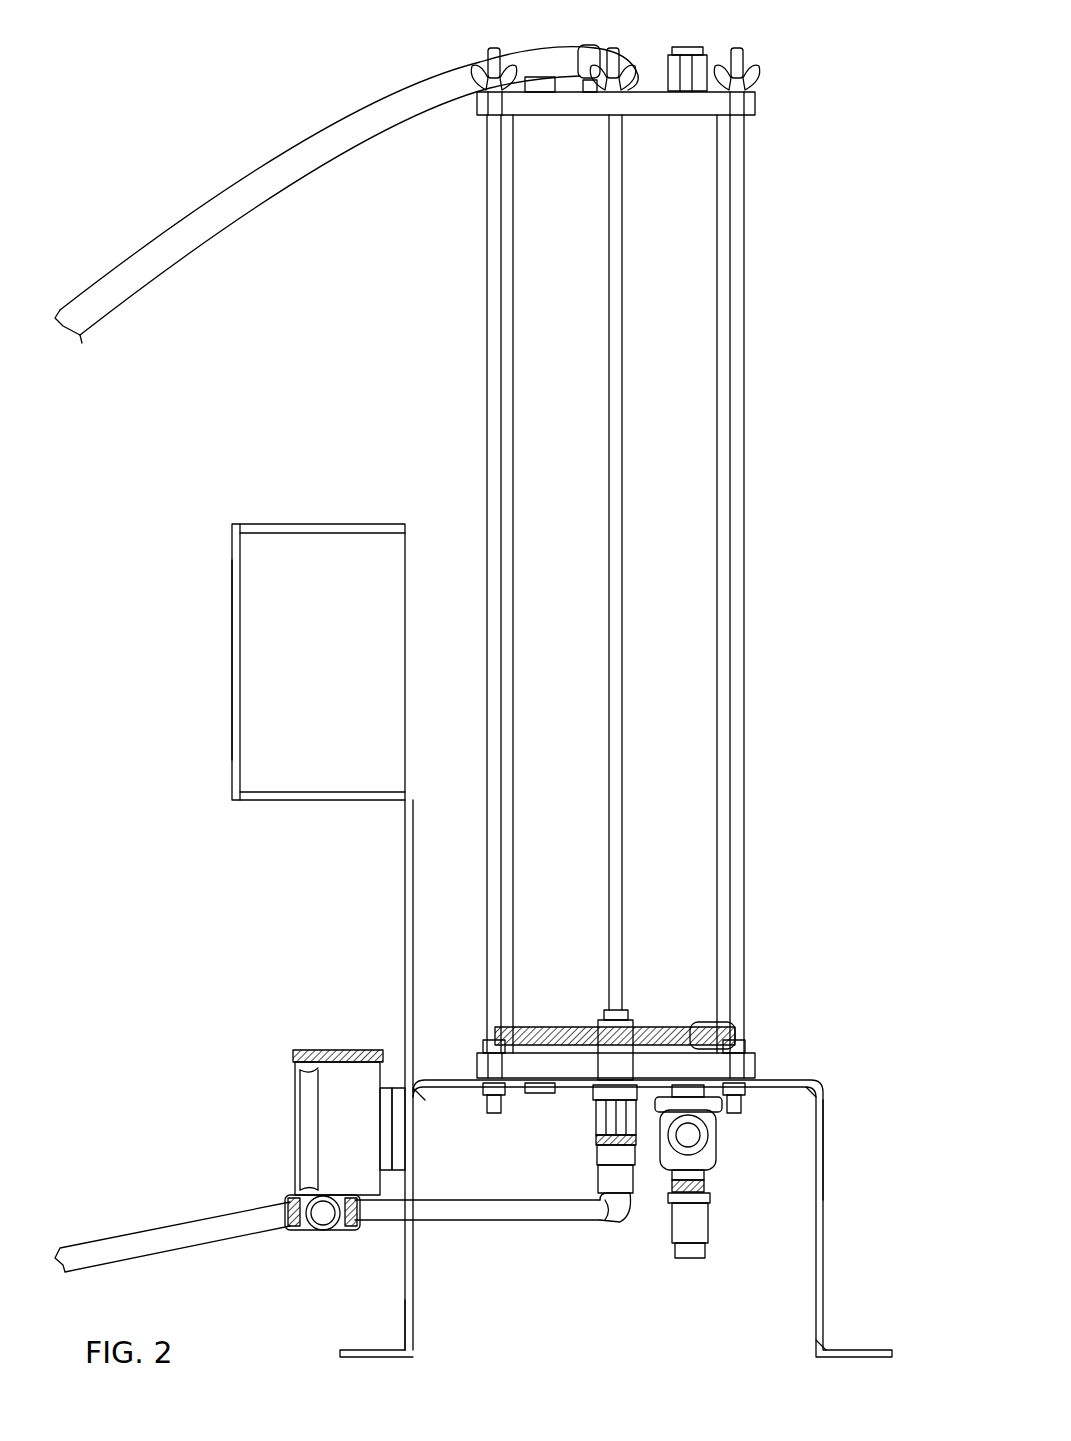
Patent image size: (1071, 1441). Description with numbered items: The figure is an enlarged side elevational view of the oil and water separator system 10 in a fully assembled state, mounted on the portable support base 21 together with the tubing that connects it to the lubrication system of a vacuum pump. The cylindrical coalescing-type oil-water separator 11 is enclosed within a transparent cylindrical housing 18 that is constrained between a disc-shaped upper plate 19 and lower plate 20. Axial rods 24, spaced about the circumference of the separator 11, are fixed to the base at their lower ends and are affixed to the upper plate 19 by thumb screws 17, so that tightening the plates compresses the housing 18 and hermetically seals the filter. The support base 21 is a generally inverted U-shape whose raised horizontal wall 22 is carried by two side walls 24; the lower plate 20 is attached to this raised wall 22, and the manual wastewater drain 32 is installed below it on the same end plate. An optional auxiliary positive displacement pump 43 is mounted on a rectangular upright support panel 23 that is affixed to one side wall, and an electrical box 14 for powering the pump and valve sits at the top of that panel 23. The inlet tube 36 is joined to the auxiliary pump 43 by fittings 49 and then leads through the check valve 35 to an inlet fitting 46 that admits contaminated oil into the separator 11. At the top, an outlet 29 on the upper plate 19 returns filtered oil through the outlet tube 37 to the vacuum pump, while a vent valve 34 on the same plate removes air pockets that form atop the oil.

The oil and water separator system 10 is at (198, 540).
The oil-water separator 11 is at (690, 490).
The electrical box 14 is at (316, 524).
The thumb screws 17 is at (485, 80).
The housing 18 is at (508, 412).
The upper plate 19 is at (757, 97).
The lower plate 20 is at (740, 1068).
The support base 21 is at (416, 1305).
The raised horizontal wall 22 is at (790, 1075).
The upright support panel 23 is at (418, 935).
The side walls / axial rods 24 is at (497, 223).
The outlet 29 is at (630, 88).
The wastewater drain 32 is at (700, 1148).
The vent valve 34 is at (702, 68).
The check valve 35 is at (635, 1215).
The inlet tube 36 is at (185, 1237).
The outlet tube 37 is at (253, 183).
The auxiliary positive displacement pump 43 is at (328, 1088).
The inlet fitting 46 is at (620, 1200).
The fittings 49 is at (335, 1200).